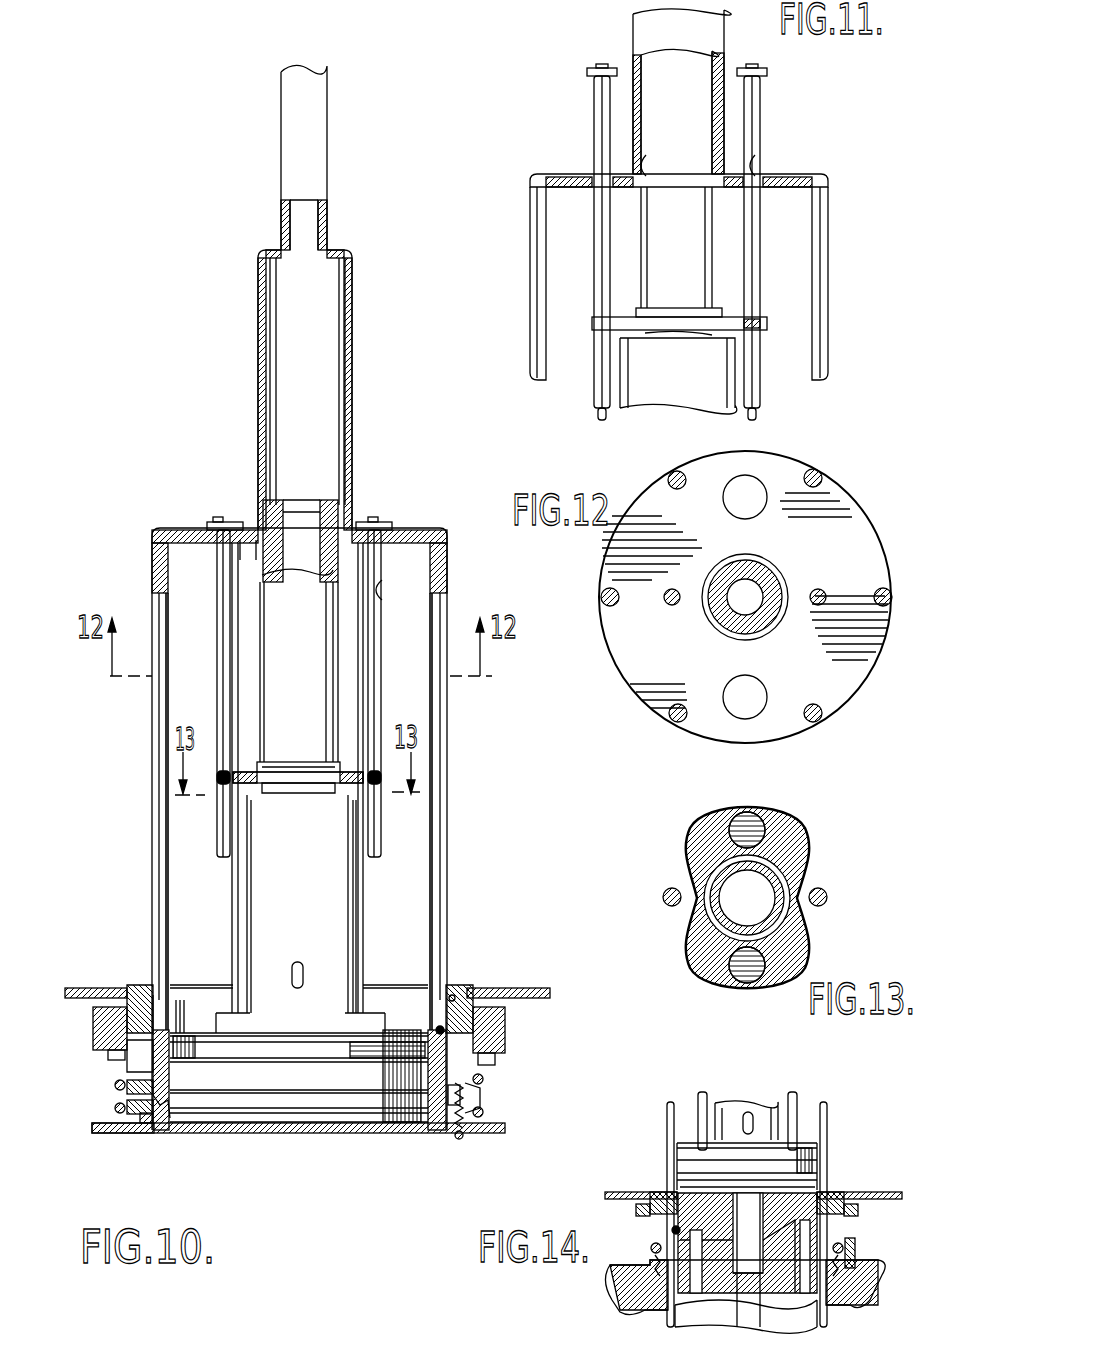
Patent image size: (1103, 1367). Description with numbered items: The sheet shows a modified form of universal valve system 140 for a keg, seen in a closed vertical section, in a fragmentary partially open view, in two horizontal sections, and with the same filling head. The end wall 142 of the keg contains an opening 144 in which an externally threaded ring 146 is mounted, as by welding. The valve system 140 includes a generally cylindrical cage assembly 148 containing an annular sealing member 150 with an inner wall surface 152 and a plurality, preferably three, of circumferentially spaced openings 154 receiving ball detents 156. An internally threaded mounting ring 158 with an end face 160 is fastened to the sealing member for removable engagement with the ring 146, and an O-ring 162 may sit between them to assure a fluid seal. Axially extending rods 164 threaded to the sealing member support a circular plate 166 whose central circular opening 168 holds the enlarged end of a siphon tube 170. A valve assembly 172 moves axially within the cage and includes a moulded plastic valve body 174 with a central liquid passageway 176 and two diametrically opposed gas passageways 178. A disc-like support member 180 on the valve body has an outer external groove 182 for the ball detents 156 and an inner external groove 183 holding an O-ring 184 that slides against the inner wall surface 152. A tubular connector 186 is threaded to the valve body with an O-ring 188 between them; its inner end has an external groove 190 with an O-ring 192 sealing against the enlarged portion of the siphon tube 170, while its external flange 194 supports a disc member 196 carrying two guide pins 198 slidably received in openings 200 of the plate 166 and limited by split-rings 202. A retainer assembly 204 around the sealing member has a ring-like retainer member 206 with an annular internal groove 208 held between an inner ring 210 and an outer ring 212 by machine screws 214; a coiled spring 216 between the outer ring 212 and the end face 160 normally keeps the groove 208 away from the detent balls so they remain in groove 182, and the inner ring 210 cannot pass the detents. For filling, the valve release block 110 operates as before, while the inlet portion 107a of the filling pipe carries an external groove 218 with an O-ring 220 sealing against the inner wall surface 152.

In FIG. 14, the inlet portion 107a is at (690, 1312).
In FIG. 14, the valve release block 110 is at (842, 1280).
In FIG. 10, the valve system 140 is at (139, 562).
In FIG. 10, the end wall 142 is at (530, 993).
In FIG. 14, the end wall 142 is at (870, 1192).
In FIG. 10, the opening 144 is at (472, 990).
In FIG. 10, the externally threaded ring 146 is at (460, 985).
In FIG. 14, the externally threaded ring 146 is at (830, 1190).
In FIG. 10, the cage assembly 148 is at (452, 832).
In FIG. 10, the sealing member 150 is at (438, 1118).
In FIG. 10, the inner wall surface 152 is at (172, 1085).
In FIG. 10, the openings 154 is at (112, 1102).
In FIG. 10, the ball detents 156 is at (165, 1128).
In FIG. 10, the mounting ring 158 is at (506, 1030).
In FIG. 10, the end face 160 is at (500, 1052).
In FIG. 10, the O-ring 162 is at (437, 1030).
In FIG. 10, the rods 164 is at (448, 868).
In FIG. 11, the rods 164 is at (815, 310).
In FIG. 12, the rods 164 is at (822, 472).
In FIG. 14, the rods 164 is at (800, 1095).
In FIG. 10, the circular plate 166 is at (408, 530).
In FIG. 11, the circular plate 166 is at (800, 182).
In FIG. 12, the circular plate 166 is at (848, 480).
In FIG. 10, the circular opening 168 is at (265, 560).
In FIG. 11, the circular opening 168 is at (645, 165).
In FIG. 10, the siphon tube 170 is at (354, 400).
In FIG. 11, the siphon tube 170 is at (630, 34).
In FIG. 10, the valve assembly 172 is at (372, 892).
In FIG. 11, the valve assembly 172 is at (664, 410).
In FIG. 10, the valve body 174 is at (247, 882).
In FIG. 13, the valve body 174 is at (685, 855).
In FIG. 14, the valve body 174 is at (725, 1108).
In FIG. 13, the liquid passageway 176 is at (770, 888).
In FIG. 13, the gas passageways 178 is at (755, 825).
In FIG. 10, the support member 180 is at (290, 1115).
In FIG. 14, the support member 180 is at (685, 1165).
In FIG. 10, the outer external groove 182 is at (405, 1125).
In FIG. 10, the inner external groove 183 is at (186, 1030).
In FIG. 10, the O-ring 184 is at (358, 1060).
In FIG. 10, the tubular connector 186 is at (313, 637).
In FIG. 11, the tubular connector 186 is at (693, 290).
In FIG. 12, the tubular connector 186 is at (757, 582).
In FIG. 10, the O-ring 188 is at (290, 794).
In FIG. 11, the O-ring 188 is at (688, 338).
In FIG. 10, the external groove 190 is at (268, 505).
In FIG. 10, the O-ring 192 is at (340, 500).
In FIG. 10, the external flange 194 is at (280, 762).
In FIG. 11, the external flange 194 is at (722, 313).
In FIG. 10, the disc member 196 is at (243, 785).
In FIG. 11, the disc member 196 is at (765, 325).
In FIG. 10, the guide pins 198 is at (220, 698).
In FIG. 11, the guide pins 198 is at (758, 232).
In FIG. 12, the guide pins 198 is at (826, 592).
In FIG. 13, the guide pins 198 is at (828, 900).
In FIG. 10, the openings 200 is at (403, 577).
In FIG. 11, the openings 200 is at (760, 162).
In FIG. 12, the openings 200 is at (815, 615).
In FIG. 10, the split-rings 202 is at (216, 528).
In FIG. 11, the split-rings 202 is at (767, 73).
In FIG. 10, the retainer assembly 204 is at (490, 1100).
In FIG. 10, the retainer member 206 is at (478, 1106).
In FIG. 10, the internal groove 208 is at (145, 1130).
In FIG. 10, the inner ring 210 is at (140, 1070).
In FIG. 10, the outer ring 212 is at (128, 1128).
In FIG. 10, the machine screws 214 is at (462, 1140).
In FIG. 10, the coiled spring 216 is at (115, 1090).
In FIG. 14, the coiled spring 216 is at (845, 1240).
In FIG. 14, the external groove 218 is at (710, 1240).
In FIG. 14, the O-ring 220 is at (670, 1232).